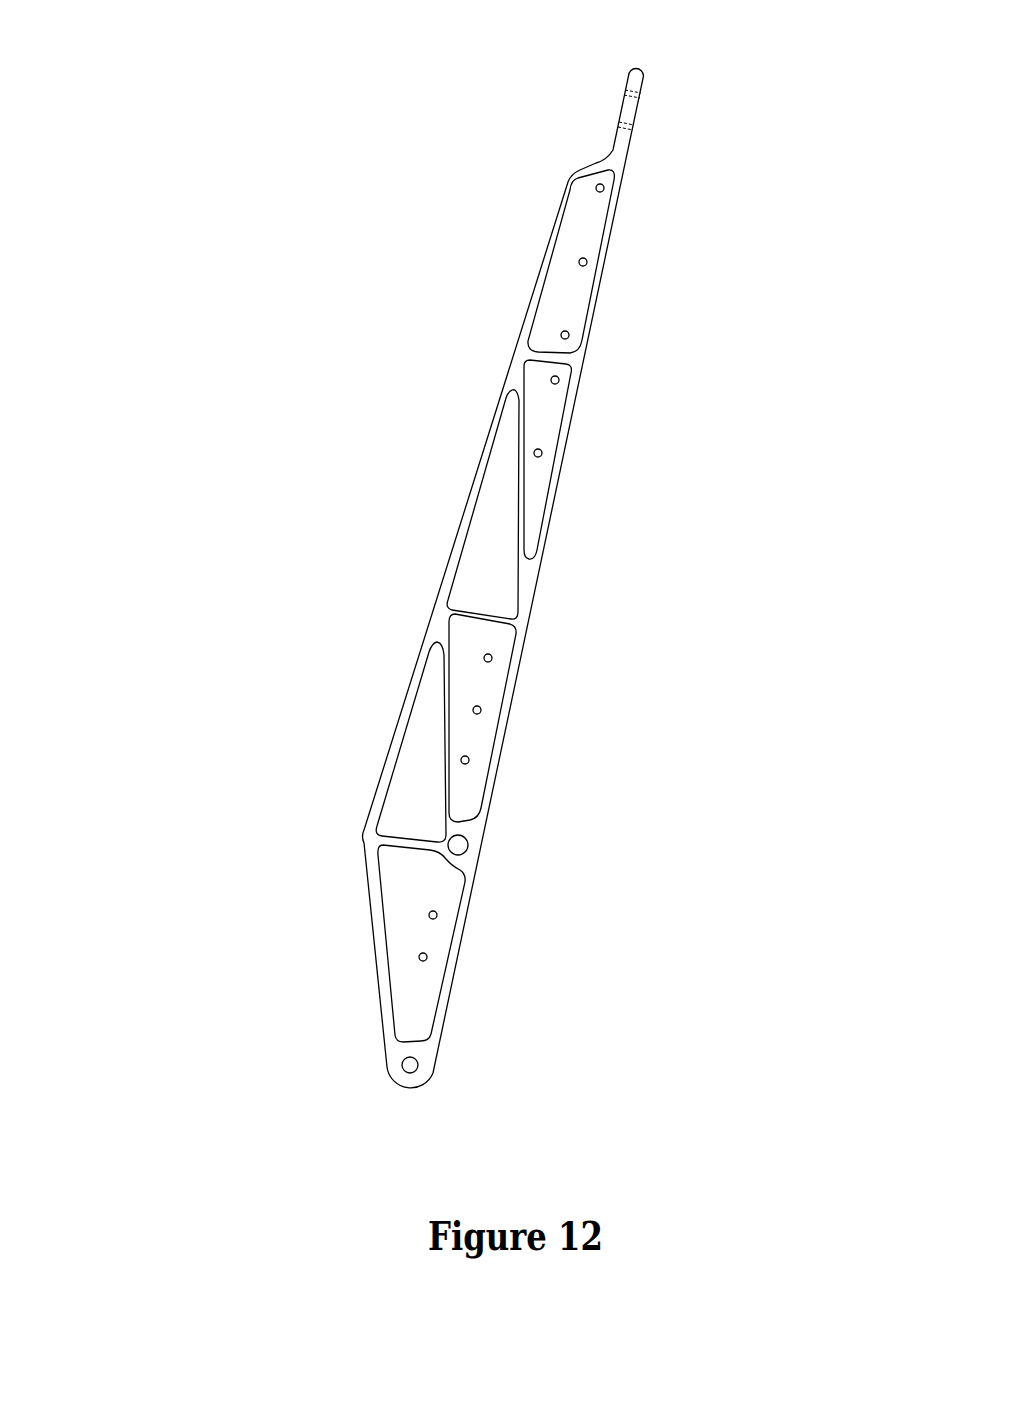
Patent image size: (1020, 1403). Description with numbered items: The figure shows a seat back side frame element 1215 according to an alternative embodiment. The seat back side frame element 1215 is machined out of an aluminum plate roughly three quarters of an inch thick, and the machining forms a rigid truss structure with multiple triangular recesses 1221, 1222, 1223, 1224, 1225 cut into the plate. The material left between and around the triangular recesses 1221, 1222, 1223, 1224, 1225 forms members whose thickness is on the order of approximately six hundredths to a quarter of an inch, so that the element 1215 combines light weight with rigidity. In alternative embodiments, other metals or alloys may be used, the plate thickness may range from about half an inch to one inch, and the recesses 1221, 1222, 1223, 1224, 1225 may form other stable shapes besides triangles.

The seat back side frame element 1215 is at (188, 46).
The triangular recess 1221 is at (503, 457).
The triangular recess 1222 is at (552, 417).
The triangular recess 1223 is at (502, 642).
The triangular recess 1224 is at (430, 707).
The triangular recess 1225 is at (390, 870).